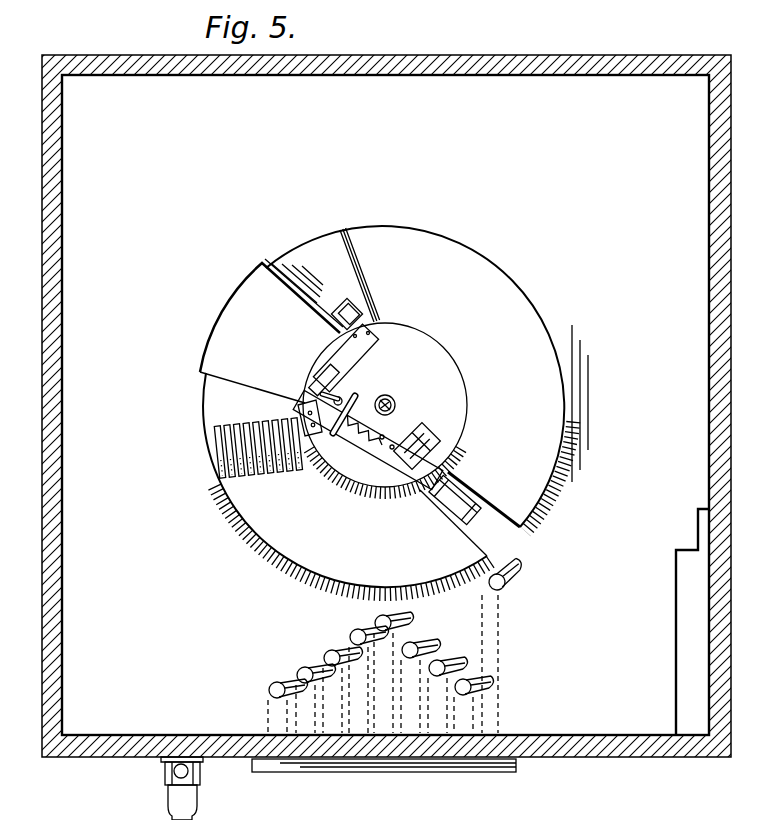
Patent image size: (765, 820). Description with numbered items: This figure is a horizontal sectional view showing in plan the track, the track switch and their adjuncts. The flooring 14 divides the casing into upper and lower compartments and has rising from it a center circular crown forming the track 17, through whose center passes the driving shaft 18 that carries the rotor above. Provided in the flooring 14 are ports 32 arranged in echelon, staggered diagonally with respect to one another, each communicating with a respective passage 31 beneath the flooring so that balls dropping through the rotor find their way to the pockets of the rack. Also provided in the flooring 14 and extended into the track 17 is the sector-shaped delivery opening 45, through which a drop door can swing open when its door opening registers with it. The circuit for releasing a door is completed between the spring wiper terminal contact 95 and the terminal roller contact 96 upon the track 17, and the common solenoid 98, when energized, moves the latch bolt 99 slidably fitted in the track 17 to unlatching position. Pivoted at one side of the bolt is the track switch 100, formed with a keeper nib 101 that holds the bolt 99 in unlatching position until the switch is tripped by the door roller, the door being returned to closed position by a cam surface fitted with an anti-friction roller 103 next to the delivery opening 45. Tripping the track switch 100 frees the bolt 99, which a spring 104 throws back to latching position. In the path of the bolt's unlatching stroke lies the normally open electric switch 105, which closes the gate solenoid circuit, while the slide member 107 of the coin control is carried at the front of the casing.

The flooring 14 is at (386, 413).
The track 17 is at (479, 258).
The driving shaft 18 is at (394, 378).
The passages 31 is at (275, 708).
The ports 32 is at (325, 652).
The delivery opening 45 is at (230, 300).
The spring wiper terminal contact 95 is at (225, 440).
The terminal roller contact 96 is at (318, 440).
The solenoid 98 is at (447, 498).
The latch bolt 99 is at (378, 440).
The track switch 100 is at (337, 343).
The keeper nib 101 is at (318, 378).
The anti-friction roller 103 is at (362, 320).
The spring 104 is at (372, 434).
The electric switch 105 is at (432, 457).
The slide member 107 is at (188, 797).